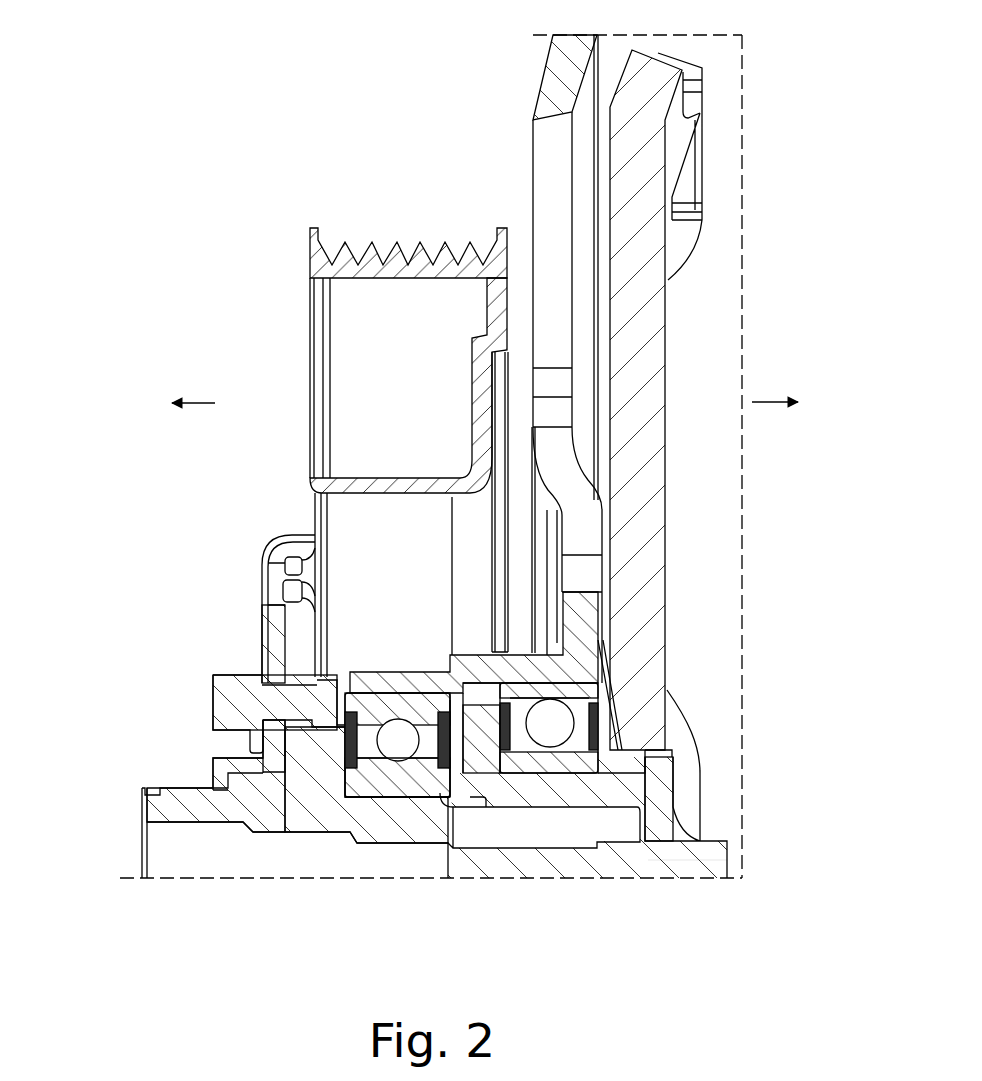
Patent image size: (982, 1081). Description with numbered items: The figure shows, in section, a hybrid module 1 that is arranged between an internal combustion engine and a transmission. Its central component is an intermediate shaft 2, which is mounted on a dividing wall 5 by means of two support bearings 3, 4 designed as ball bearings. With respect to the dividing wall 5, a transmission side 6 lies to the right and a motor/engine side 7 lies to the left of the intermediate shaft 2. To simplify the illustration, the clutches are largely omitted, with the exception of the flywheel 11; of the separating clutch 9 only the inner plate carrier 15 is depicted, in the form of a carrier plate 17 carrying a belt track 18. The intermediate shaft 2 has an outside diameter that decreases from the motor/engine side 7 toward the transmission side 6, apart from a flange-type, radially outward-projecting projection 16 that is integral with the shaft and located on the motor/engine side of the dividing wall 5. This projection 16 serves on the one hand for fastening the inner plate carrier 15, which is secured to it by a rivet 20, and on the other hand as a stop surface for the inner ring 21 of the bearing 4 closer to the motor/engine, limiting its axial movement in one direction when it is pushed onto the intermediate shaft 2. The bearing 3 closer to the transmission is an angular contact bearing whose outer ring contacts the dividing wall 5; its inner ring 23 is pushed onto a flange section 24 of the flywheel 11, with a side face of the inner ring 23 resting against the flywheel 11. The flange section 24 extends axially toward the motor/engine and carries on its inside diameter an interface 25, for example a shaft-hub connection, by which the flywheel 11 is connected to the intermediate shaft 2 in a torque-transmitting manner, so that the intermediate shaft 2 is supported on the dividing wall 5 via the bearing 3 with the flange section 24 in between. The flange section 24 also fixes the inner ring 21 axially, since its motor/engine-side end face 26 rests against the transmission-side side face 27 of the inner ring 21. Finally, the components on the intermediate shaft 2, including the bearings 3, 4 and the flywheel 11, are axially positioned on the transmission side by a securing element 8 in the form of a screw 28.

The hybrid module 1 is at (222, 134).
The intermediate shaft 2 is at (173, 812).
The bearing 3 is at (583, 742).
The bearing 4 is at (376, 716).
The dividing wall 5 is at (565, 80).
The transmission side 6 is at (799, 402).
The motor/engine side 7 is at (166, 402).
The securing element 8 is at (743, 857).
The screw 28 is at (650, 862).
The separating clutch 9 is at (340, 412).
The flywheel 11 is at (650, 258).
The inner plate carrier 15 is at (278, 635).
The projection 16 is at (312, 750).
The carrier plate 17 is at (318, 478).
The belt track 18 is at (397, 252).
The rivet 20 is at (243, 688).
The inner ring 21 is at (345, 780).
The inner ring 23 is at (583, 760).
The flange section 24 is at (537, 793).
The interface 25 is at (615, 797).
The end face 26 is at (432, 792).
The side face 27 is at (455, 790).